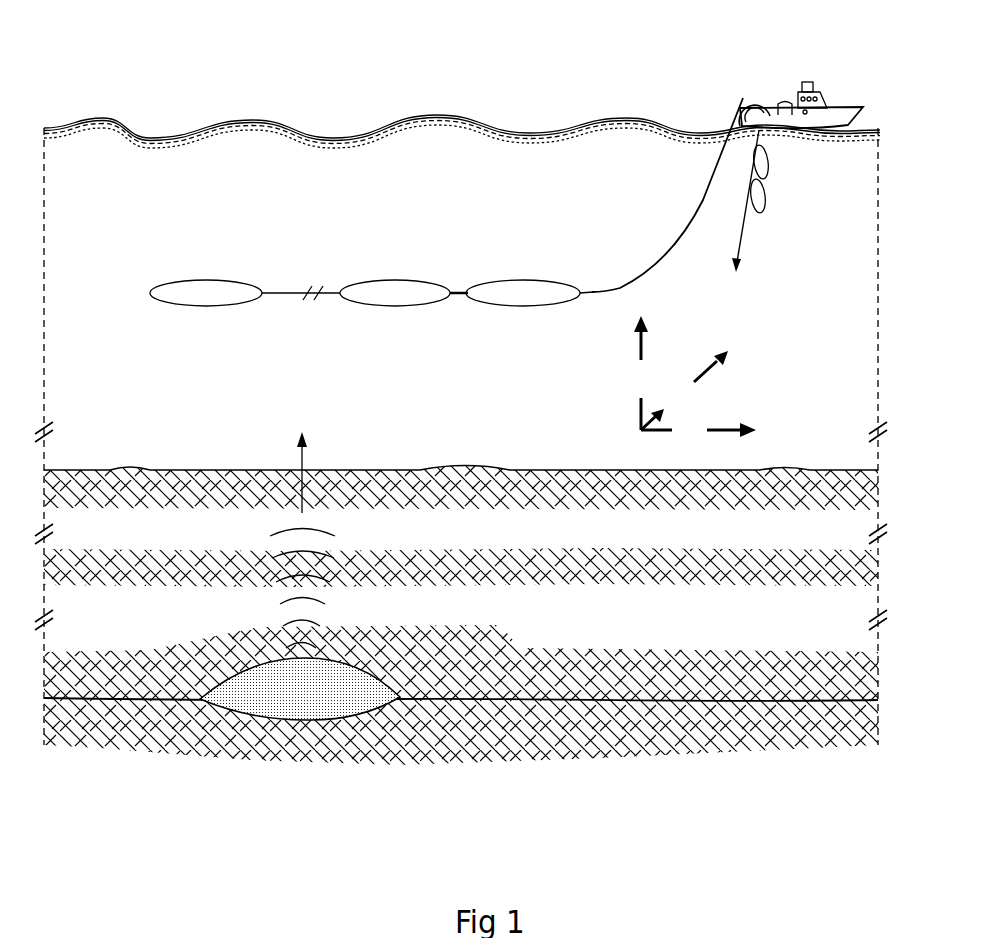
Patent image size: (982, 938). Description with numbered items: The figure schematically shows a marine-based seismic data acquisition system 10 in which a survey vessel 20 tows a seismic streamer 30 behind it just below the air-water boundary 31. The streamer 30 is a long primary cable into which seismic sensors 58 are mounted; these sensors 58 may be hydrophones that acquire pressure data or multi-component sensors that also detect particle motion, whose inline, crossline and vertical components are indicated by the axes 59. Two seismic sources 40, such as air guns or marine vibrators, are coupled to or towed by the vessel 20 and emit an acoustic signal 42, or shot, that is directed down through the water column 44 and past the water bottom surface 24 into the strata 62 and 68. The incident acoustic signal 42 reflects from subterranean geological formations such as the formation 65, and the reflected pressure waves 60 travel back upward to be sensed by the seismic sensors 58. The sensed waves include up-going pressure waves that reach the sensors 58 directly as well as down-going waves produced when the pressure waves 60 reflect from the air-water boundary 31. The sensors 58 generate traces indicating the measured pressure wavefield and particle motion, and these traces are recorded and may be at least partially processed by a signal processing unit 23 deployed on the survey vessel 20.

The marine-based seismic data acquisition system 10 is at (245, 78).
The survey vessel 20 is at (850, 104).
The signal processing unit 23 is at (784, 100).
The water bottom surface 24 is at (762, 470).
The seismic streamer 30 is at (703, 203).
The air-water boundary 31 is at (410, 117).
The seismic source 40 is at (771, 160).
The acoustic signal 42 is at (747, 237).
The water column 44 is at (461, 436).
The seismic sensor 58 is at (213, 281).
The axes 59 is at (626, 438).
The pressure waves 60 is at (258, 609).
The stratum 62 is at (461, 662).
The formation 65 is at (300, 689).
The stratum 68 is at (461, 731).